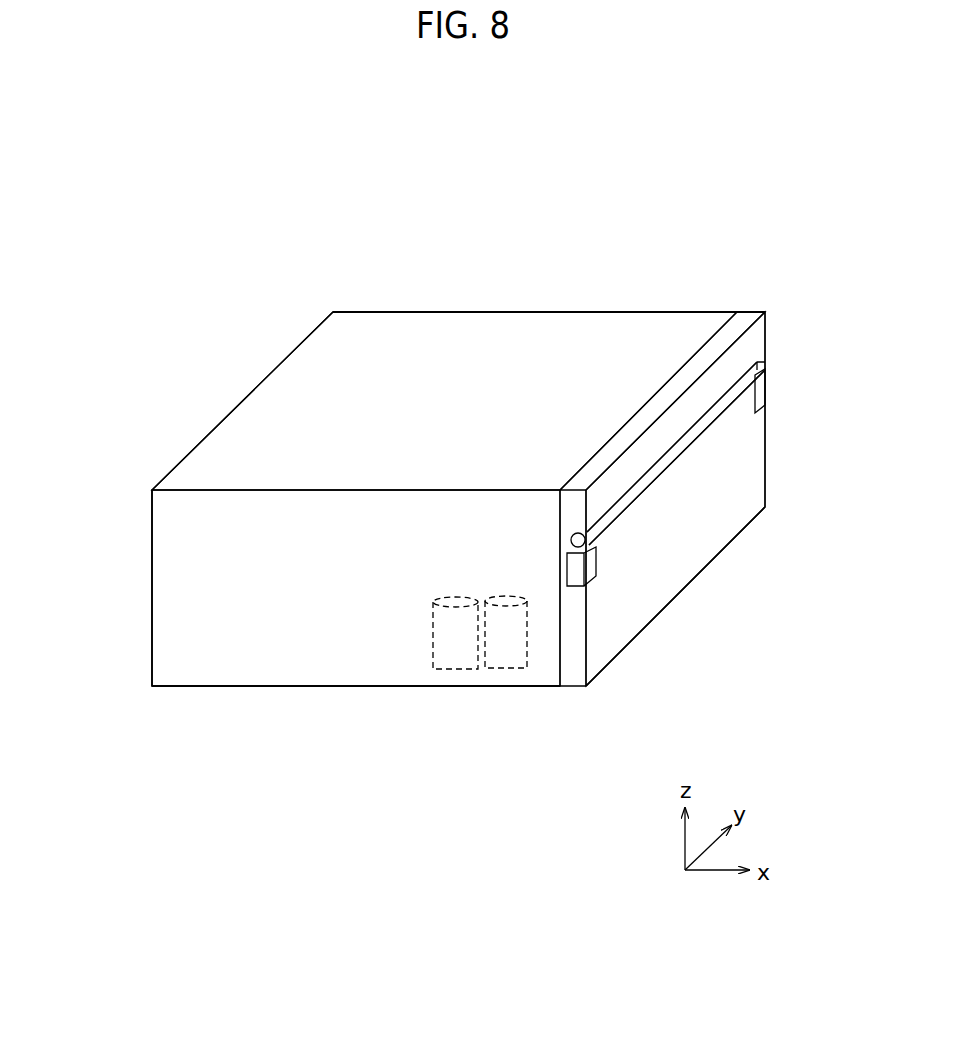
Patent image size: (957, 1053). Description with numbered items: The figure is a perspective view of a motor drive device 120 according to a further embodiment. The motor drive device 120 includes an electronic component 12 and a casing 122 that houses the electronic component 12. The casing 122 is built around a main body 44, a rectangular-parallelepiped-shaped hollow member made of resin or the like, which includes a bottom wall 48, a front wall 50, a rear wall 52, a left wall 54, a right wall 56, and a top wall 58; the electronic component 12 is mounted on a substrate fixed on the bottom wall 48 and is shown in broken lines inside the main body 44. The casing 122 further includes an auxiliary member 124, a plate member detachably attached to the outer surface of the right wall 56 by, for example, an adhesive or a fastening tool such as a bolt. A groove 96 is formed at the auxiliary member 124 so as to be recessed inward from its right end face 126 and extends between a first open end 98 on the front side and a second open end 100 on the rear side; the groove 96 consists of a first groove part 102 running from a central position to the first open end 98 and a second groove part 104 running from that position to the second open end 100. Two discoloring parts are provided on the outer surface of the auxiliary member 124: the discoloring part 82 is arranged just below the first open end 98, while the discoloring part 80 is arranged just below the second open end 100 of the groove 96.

The motor drive device 120 is at (763, 178).
The casing 122 is at (227, 385).
The top wall 58 is at (373, 340).
The main body 44 is at (433, 312).
The front wall 50 is at (537, 312).
The rear wall 52 is at (190, 613).
The left wall 54 is at (152, 558).
The bottom wall 48 is at (353, 688).
The right wall 56 is at (566, 628).
The right end face 126 is at (673, 567).
The auxiliary member 124 is at (663, 612).
The groove 96 is at (682, 438).
The first groove part 102 is at (715, 405).
The second groove part 104 is at (643, 481).
The first open end 98 is at (762, 362).
The discoloring part 82 is at (766, 393).
The second open end 100 is at (571, 543).
The discoloring part 80 is at (588, 563).
The electronic component 12 is at (447, 638).